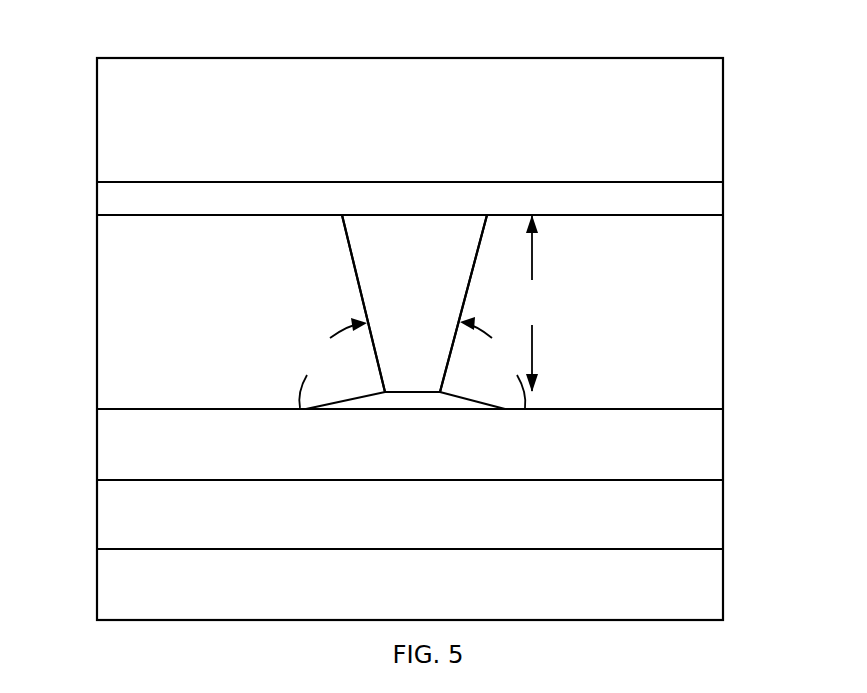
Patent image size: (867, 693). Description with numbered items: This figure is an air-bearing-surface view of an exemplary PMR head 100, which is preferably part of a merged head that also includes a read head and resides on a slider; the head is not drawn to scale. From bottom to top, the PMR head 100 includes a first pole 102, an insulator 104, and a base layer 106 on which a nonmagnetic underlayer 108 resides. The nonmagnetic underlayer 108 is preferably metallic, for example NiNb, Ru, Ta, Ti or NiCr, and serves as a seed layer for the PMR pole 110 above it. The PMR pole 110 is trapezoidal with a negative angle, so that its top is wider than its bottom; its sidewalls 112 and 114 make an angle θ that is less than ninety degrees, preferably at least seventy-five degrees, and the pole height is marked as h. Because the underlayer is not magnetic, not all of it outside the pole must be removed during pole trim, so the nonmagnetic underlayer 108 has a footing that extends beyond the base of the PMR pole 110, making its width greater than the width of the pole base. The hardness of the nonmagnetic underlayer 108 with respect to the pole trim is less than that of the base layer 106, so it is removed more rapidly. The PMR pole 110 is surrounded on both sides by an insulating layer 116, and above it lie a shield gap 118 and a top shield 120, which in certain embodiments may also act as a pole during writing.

The PMR head 100 is at (407, 36).
The first pole 102 is at (723, 602).
The insulator 104 is at (97, 532).
The base layer 106 is at (723, 428).
The nonmagnetic underlayer 108 is at (330, 410).
The PMR pole 110 is at (372, 213).
The sidewall 112 is at (340, 299).
The sidewall 114 is at (466, 368).
The insulating layer 116 is at (97, 302).
The shield gap 118 is at (723, 195).
The top shield 120 is at (723, 112).